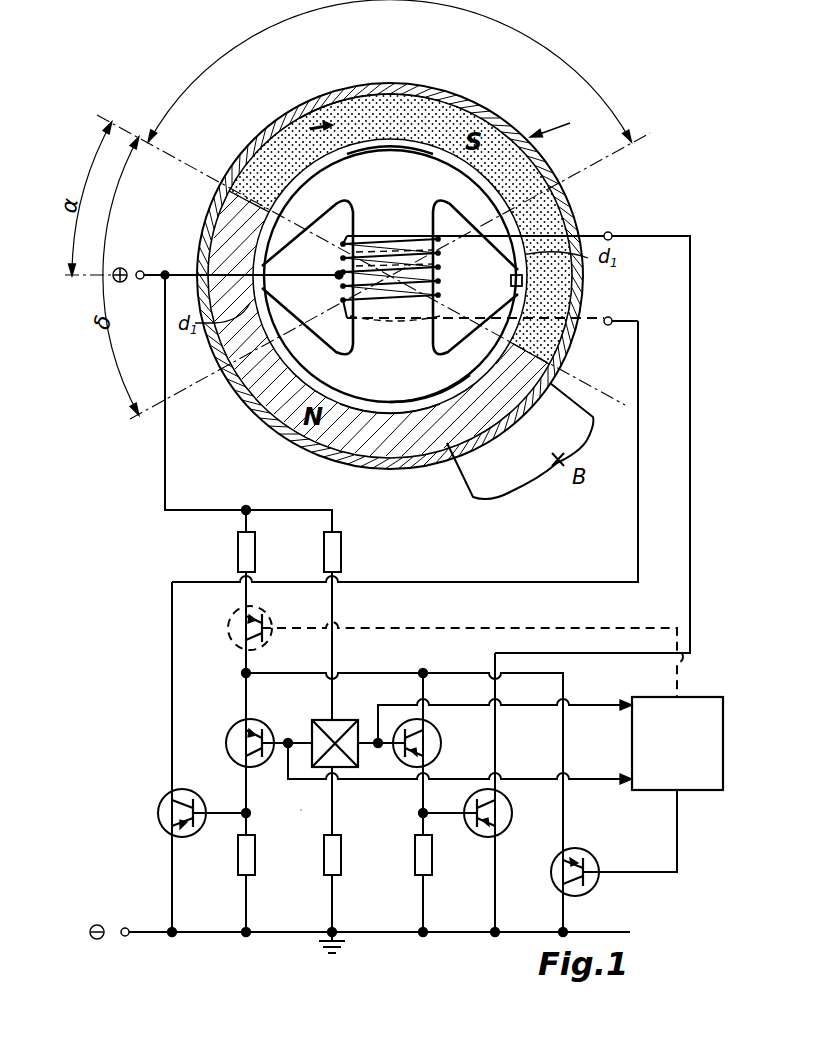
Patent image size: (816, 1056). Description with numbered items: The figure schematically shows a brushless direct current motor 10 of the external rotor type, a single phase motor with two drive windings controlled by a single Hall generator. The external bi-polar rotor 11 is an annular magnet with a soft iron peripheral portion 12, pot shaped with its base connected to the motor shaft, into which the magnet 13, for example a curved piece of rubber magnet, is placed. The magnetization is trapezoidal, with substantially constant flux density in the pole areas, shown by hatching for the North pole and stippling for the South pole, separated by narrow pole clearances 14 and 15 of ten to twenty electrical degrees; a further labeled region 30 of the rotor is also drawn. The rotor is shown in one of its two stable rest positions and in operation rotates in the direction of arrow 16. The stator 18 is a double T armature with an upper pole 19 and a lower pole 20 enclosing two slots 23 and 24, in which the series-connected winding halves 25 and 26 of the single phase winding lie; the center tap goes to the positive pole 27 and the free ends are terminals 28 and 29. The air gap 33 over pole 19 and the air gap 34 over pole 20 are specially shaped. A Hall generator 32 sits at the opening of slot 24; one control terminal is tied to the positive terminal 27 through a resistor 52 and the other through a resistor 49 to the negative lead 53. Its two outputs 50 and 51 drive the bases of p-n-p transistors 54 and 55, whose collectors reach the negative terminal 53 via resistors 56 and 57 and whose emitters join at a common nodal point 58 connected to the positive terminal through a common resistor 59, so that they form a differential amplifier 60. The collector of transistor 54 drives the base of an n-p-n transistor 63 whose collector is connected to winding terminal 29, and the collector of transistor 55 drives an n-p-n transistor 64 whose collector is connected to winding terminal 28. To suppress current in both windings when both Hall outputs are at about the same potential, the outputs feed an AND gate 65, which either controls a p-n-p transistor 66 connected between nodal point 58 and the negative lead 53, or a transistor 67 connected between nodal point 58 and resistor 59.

The motor 10 is at (240, 116).
The external bi-polar rotor 11 is at (566, 125).
The peripheral portion 12 is at (462, 107).
The magnet 13 is at (523, 173).
The pole clearance 14 is at (224, 192).
The pole clearance 15 is at (560, 371).
The arrow 16 is at (300, 138).
The stator 18 is at (385, 194).
The upper pole 19 is at (400, 163).
The lower pole 20 is at (427, 395).
The slot 23 is at (330, 338).
The slot 24 is at (450, 338).
The winding half 25 is at (398, 240).
The winding half 26 is at (385, 302).
The positive pole 27 is at (147, 268).
The winding terminal 28 is at (613, 232).
The winding terminal 29 is at (612, 317).
The air gap 30 is at (290, 203).
The Hall generator 32 is at (511, 281).
The air gap 33 is at (356, 148).
The air gap 34 is at (380, 414).
The resistor 49 is at (342, 868).
The Hall generator output 50 is at (283, 714).
The connection line 51 is at (368, 720).
The resistor 52 is at (342, 553).
The negative lead 53 is at (207, 934).
The p-n-p transistor 54 is at (270, 766).
The p-n-p transistor 55 is at (442, 744).
The resistor 56 is at (256, 857).
The resistor 57 is at (433, 857).
The common nodal point 58 is at (250, 672).
The common resistor 59 is at (256, 553).
The differential amplifier 60 is at (388, 822).
The n-p-n transistor 63 is at (200, 796).
The n-p-n transistor 64 is at (513, 814).
The AND gate 65 is at (698, 702).
The p-n-p transistor 66 is at (592, 854).
The transistor 67 is at (272, 612).